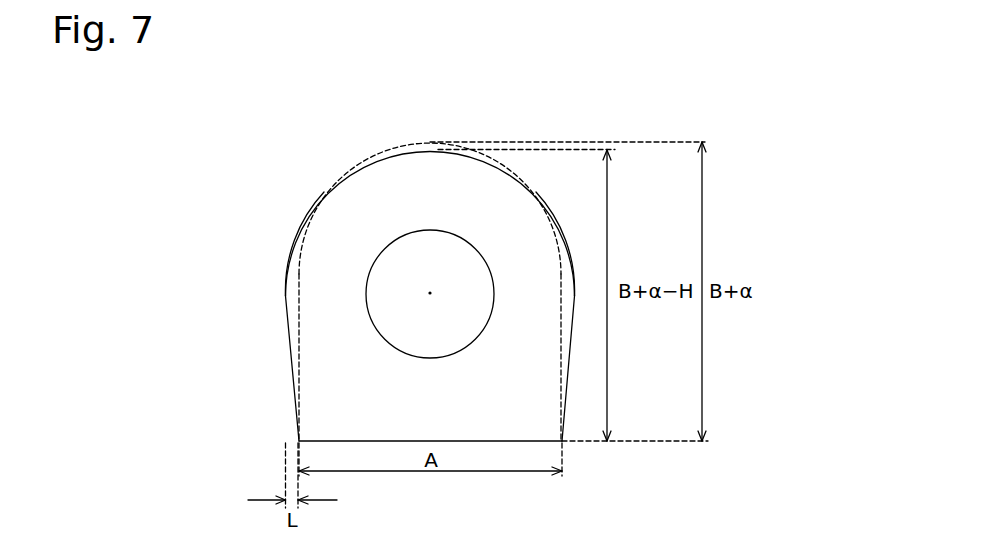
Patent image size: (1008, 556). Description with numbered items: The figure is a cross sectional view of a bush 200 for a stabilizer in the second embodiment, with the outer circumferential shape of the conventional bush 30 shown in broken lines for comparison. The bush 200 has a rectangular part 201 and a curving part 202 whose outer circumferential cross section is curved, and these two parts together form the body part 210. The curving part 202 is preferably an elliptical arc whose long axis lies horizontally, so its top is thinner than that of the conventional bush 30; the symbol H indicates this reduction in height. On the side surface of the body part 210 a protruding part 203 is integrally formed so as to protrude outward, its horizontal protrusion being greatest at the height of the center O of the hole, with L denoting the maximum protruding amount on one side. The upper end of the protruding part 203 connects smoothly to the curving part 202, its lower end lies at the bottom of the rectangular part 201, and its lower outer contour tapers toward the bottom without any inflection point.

The bush 200 is at (522, 131).
The rectangular part 201 is at (310, 400).
The curving part 202 is at (346, 196).
The protruding part 203 is at (287, 265).
The body part 210 is at (552, 209).
The bush 30 is at (298, 300).
The center O is at (430, 293).